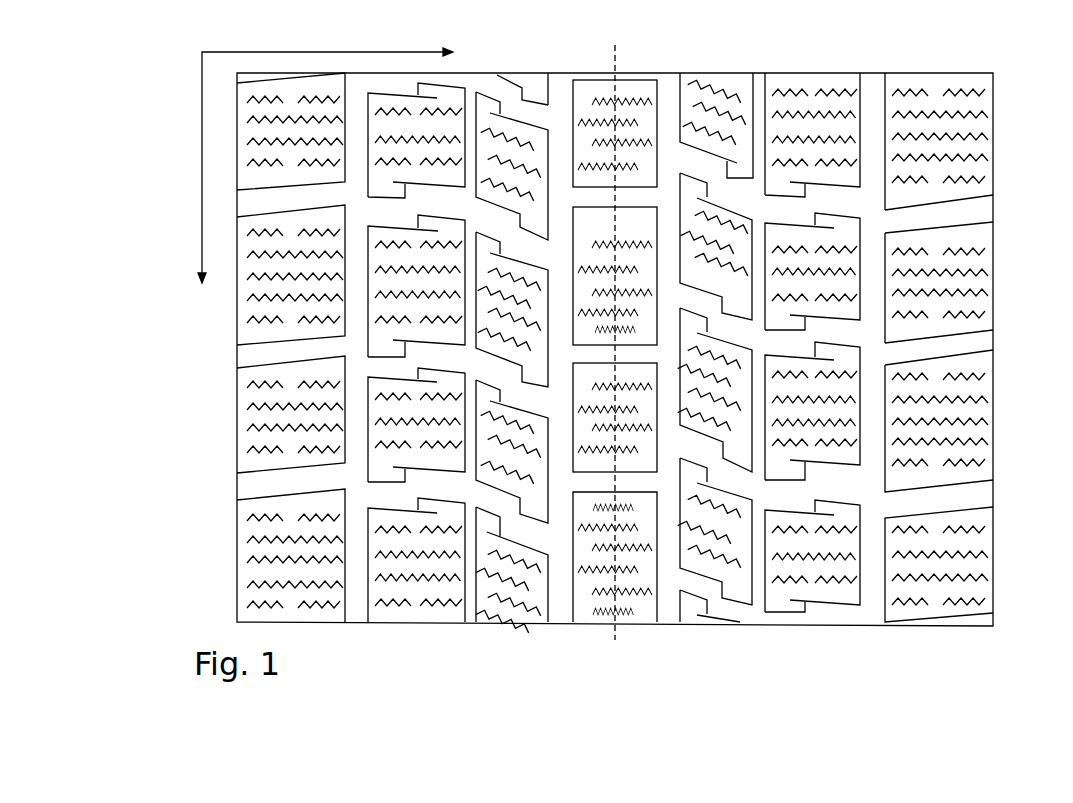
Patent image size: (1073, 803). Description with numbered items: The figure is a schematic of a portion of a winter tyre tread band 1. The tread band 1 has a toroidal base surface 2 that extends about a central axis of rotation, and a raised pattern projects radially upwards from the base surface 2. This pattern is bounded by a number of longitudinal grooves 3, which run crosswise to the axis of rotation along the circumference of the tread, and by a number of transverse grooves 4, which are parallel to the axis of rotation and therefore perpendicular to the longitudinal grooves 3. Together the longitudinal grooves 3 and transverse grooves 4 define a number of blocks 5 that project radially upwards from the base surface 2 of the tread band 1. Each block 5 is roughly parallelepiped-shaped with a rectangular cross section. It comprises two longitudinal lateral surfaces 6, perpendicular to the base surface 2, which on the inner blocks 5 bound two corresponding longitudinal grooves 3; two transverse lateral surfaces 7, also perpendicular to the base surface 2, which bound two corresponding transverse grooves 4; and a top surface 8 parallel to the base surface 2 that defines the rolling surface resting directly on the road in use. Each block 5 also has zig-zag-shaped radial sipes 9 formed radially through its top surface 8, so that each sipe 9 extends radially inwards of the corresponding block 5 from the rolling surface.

The winter tyre tread band 1 is at (968, 648).
The base surface 2 is at (972, 495).
The longitudinal groove 3 is at (667, 117).
The transverse groove 4 is at (934, 212).
The block 5 is at (965, 282).
The longitudinal lateral surface 6 is at (878, 445).
The transverse lateral surface 7 is at (968, 352).
The top surface 8 is at (957, 428).
The radial sipe 9 is at (977, 462).